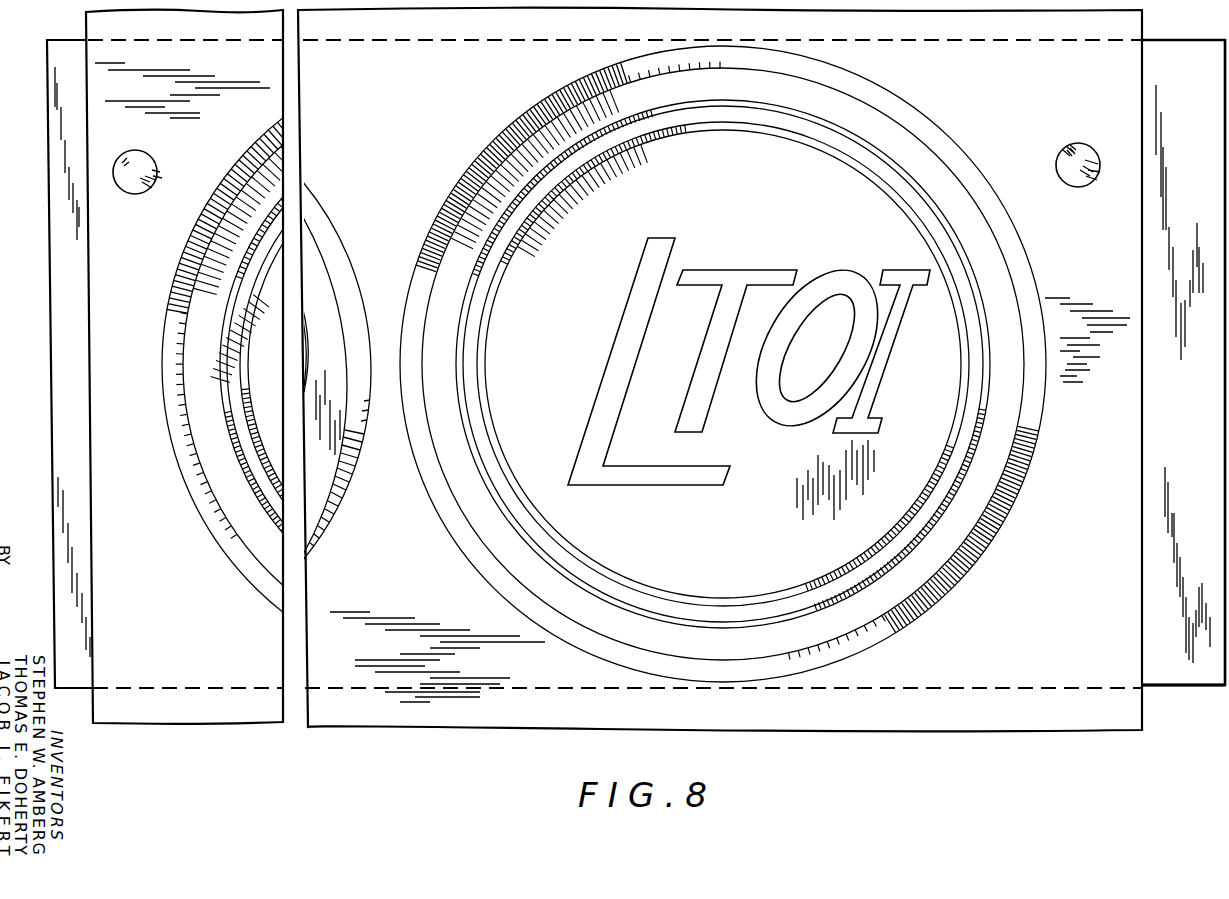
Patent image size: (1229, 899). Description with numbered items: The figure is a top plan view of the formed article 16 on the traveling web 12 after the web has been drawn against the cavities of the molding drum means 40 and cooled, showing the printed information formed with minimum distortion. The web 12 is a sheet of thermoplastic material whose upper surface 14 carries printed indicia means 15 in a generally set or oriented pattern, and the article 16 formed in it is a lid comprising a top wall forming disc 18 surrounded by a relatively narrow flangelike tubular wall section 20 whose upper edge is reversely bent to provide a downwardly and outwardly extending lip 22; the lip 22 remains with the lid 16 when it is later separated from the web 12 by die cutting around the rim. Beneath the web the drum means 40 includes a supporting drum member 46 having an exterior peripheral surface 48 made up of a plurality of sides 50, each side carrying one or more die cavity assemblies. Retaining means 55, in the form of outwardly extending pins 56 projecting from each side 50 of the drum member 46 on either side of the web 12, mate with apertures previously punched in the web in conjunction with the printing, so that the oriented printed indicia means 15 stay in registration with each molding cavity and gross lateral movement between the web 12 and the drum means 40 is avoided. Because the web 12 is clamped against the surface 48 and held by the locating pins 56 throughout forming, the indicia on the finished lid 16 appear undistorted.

The web 12 is at (440, 733).
The upper surface 14 is at (370, 708).
The printed indicia means 15 is at (888, 273).
The thin walled article 16 is at (858, 590).
The top wall forming disc 18 is at (716, 203).
The flangelike tubular wall section 20 is at (472, 303).
The lip 22 is at (470, 253).
The molding drum means 40 is at (1162, 695).
The supporting drum member 46 is at (52, 344).
The exterior peripheral surface 48 is at (1200, 676).
The side 50 is at (62, 246).
The retaining means 55 is at (1078, 140).
The pin 56 is at (157, 165).